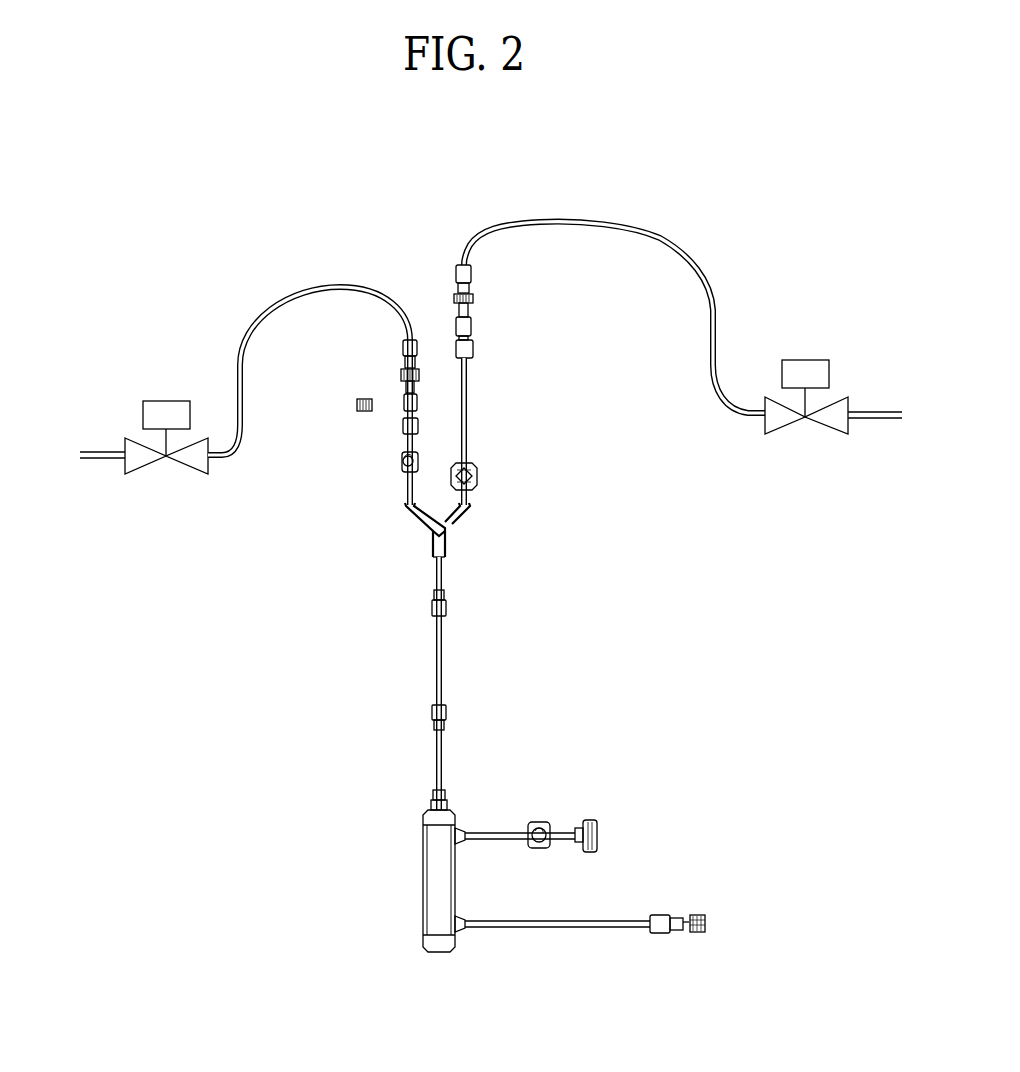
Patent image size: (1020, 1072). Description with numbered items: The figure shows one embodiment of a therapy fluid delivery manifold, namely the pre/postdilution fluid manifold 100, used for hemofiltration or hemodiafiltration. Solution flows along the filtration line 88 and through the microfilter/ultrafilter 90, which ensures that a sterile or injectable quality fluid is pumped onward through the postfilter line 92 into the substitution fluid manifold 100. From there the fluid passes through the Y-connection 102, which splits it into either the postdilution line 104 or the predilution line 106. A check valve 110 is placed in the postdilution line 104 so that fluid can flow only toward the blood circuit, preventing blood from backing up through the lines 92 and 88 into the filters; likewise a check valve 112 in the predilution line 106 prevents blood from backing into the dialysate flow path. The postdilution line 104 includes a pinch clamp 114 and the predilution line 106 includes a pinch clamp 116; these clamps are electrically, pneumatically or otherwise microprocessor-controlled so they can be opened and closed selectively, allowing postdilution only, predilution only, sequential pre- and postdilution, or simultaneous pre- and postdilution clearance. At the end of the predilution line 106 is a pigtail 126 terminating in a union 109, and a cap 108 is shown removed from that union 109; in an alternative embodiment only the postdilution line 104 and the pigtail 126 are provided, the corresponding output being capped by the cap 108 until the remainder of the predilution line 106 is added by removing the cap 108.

The filtration line 88 is at (585, 920).
The microfilter/ultrafilter 90 is at (437, 954).
The postfilter line 92 is at (444, 752).
The pre/postdilution fluid manifold 100 is at (793, 297).
The Y-connection 102 is at (430, 536).
The postdilution line 104 is at (711, 340).
The predilution line 106 is at (322, 292).
The cap 108 is at (356, 406).
The union 109 is at (403, 402).
The check valve 110 is at (474, 300).
The check valve 112 is at (403, 372).
The pinch clamp 114 is at (785, 425).
The pinch clamp 116 is at (185, 477).
The pigtail 126 is at (398, 490).